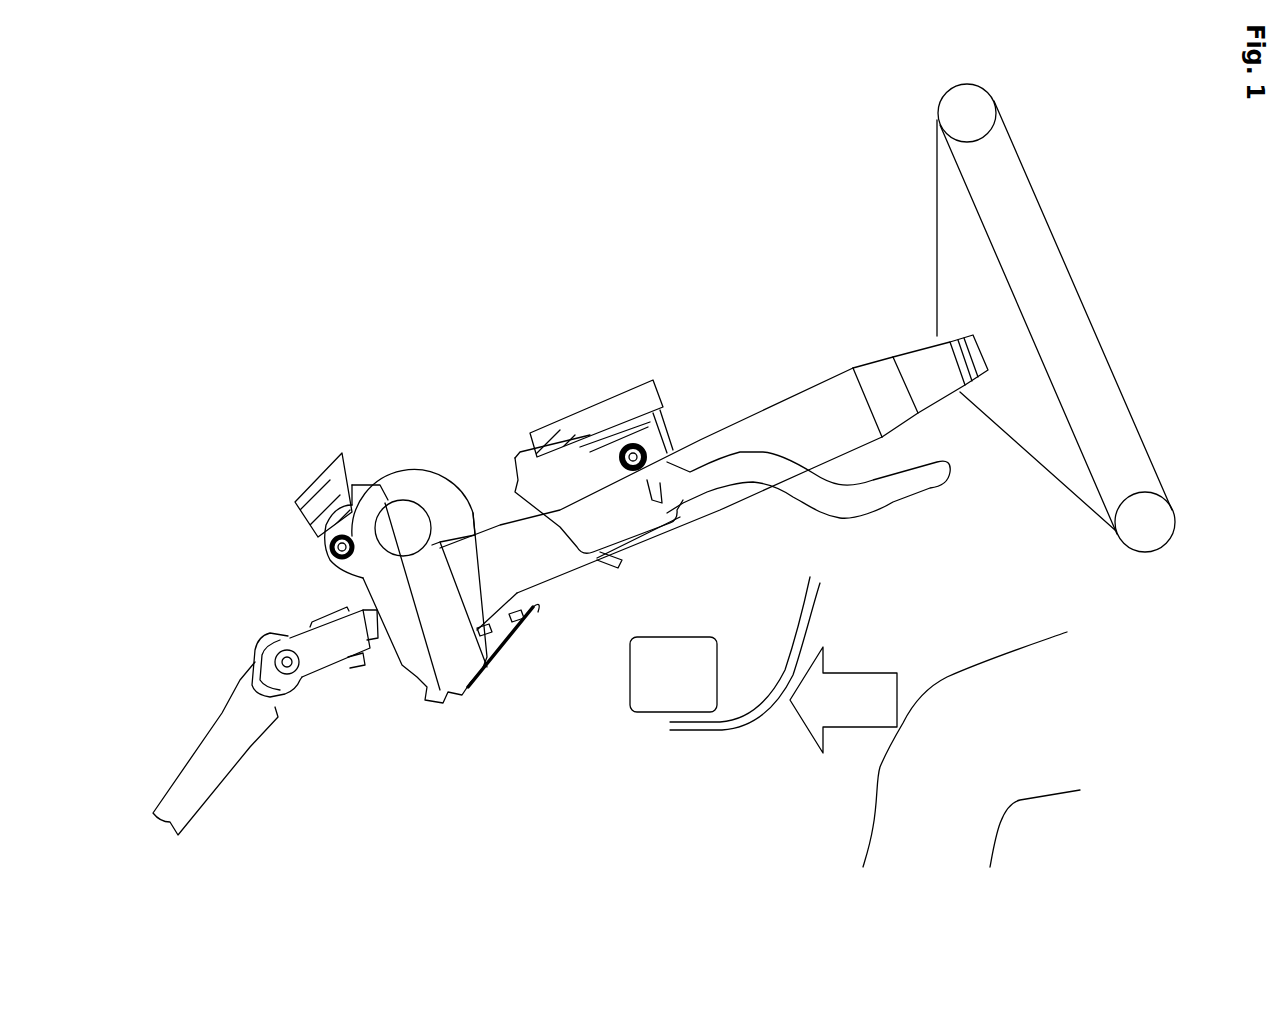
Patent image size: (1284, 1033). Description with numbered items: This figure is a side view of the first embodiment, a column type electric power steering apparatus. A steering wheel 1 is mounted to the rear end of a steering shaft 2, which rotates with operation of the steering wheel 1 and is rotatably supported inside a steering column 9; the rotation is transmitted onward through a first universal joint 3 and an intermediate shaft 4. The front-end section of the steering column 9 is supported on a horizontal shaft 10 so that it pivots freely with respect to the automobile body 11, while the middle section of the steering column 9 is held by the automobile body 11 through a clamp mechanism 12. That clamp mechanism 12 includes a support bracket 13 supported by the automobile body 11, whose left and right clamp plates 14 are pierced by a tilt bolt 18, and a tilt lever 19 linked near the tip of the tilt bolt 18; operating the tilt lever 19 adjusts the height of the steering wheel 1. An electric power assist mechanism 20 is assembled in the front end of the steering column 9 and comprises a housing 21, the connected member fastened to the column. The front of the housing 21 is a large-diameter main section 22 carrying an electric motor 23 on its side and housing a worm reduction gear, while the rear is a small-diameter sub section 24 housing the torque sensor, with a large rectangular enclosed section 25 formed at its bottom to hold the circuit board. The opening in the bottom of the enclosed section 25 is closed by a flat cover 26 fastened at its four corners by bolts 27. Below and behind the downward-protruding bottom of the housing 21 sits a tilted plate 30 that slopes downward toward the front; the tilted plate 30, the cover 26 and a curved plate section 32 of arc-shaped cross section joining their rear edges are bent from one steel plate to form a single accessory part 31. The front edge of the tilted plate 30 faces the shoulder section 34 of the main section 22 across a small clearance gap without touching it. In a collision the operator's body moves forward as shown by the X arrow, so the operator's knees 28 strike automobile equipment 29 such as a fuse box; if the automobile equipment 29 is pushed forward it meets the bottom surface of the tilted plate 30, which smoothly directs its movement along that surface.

The steering wheel 1 is at (1053, 233).
The steering shaft 2 is at (913, 370).
The first universal joint 3 is at (285, 650).
The intermediate shaft 4 is at (207, 767).
The steering column 9 is at (792, 420).
The horizontal shaft 10 is at (328, 545).
The automobile body 11 is at (590, 420).
The clamp mechanism 12 is at (684, 428).
The support bracket 13 is at (627, 500).
The clamp plates 14 is at (570, 470).
The tilt bolt 18 is at (625, 440).
The tilt lever 19 is at (927, 478).
The electric power assist mechanism 20 is at (368, 452).
The housing 21 is at (383, 643).
The main section 22 is at (440, 630).
The electric motor 23 is at (404, 470).
The sub section 24 is at (462, 557).
The enclosed section 25 is at (492, 612).
The cover 26 is at (510, 647).
The bolts 27 is at (500, 657).
The operator's knees 28 is at (913, 700).
The automobile equipment 29 is at (650, 713).
The tilted plate 30 is at (520, 670).
The accessory part 31 is at (533, 637).
The curved plate section 32 is at (537, 607).
The shoulder section 34 is at (480, 667).
The X arrow X is at (853, 670).